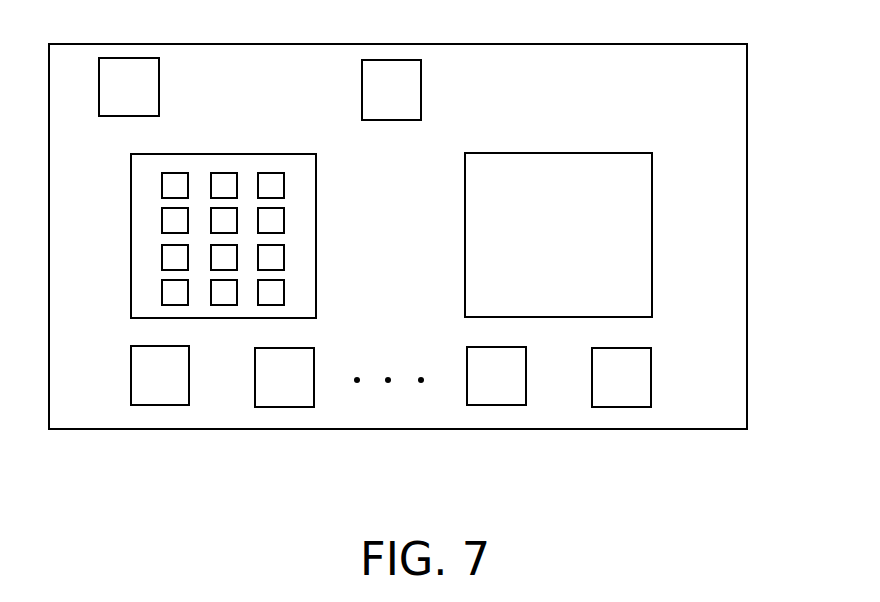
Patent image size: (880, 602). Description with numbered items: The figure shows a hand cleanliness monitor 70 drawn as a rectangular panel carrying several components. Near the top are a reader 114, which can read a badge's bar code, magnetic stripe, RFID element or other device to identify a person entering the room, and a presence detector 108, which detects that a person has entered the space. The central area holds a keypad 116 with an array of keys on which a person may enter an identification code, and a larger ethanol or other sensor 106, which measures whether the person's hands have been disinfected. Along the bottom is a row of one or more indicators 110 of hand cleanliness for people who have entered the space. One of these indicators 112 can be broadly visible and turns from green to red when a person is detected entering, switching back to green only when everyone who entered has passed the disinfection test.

The hand cleanliness monitor 70 is at (747, 285).
The ethanol or other sensor 106 is at (652, 200).
The presence detector 108 is at (421, 100).
The indicators of hand cleanliness 110 is at (162, 405).
The indicator 112 is at (505, 408).
The reader 114 is at (154, 98).
The keypad 116 is at (316, 283).